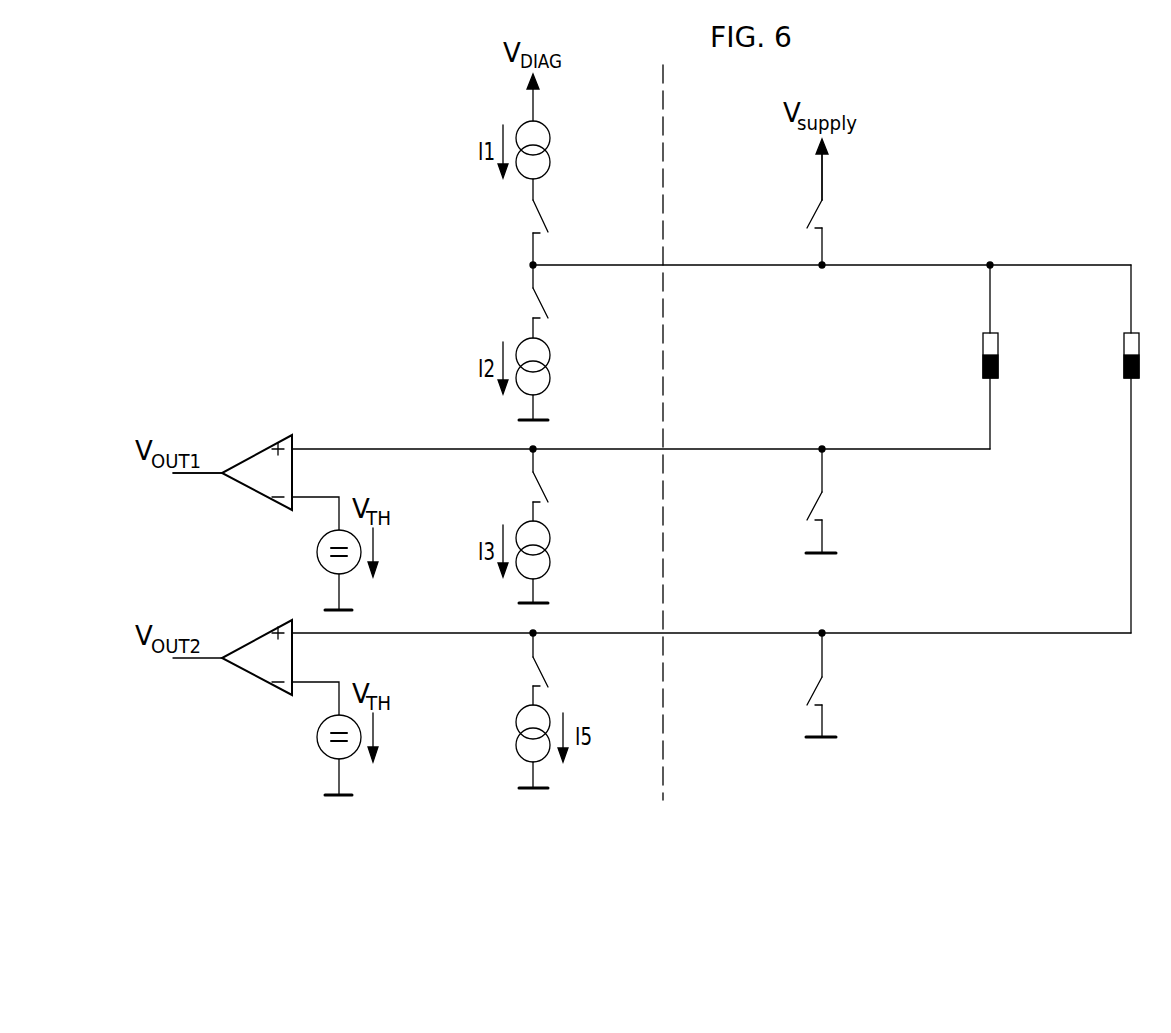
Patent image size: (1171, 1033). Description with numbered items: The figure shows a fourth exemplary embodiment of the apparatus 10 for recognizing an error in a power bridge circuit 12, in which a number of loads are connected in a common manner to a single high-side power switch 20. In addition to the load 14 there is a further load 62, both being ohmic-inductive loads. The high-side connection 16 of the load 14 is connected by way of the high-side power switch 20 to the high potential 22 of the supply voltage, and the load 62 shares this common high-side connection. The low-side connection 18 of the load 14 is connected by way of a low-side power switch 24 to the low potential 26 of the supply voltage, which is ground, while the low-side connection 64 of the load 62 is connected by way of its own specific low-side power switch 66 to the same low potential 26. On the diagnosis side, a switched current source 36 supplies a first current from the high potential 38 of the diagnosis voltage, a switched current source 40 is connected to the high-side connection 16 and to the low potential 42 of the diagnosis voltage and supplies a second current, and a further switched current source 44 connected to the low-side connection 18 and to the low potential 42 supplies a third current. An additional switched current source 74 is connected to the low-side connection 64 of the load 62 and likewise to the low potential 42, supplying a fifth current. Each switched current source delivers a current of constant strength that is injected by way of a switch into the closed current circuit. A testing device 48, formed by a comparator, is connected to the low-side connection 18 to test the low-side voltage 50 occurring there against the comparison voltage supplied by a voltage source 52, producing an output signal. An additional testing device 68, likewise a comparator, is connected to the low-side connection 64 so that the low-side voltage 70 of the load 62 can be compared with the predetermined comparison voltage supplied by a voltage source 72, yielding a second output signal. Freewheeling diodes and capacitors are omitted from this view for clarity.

The apparatus 10 is at (256, 128).
The power bridge circuit 12 is at (1068, 101).
The load 14 is at (982, 351).
The high-side connection 16 is at (826, 262).
The low-side connection 18 is at (826, 447).
The high-side power switch 20 is at (811, 214).
The high potential of the supply voltage 22 is at (816, 144).
The low-side power switch 24 is at (811, 506).
The low potential of the supply voltage 26 is at (812, 558).
The switched current source 36 is at (496, 187).
The high potential of the diagnosis voltage 38 is at (526, 82).
The switched current source 40 is at (496, 320).
The low potential of the diagnosis voltage 42 is at (541, 422).
The switched current source 44 is at (503, 506).
The testing device 48 is at (250, 492).
The low-side voltage 50 is at (845, 470).
The voltage source 52 is at (317, 553).
The load 62 is at (1122, 351).
The low-side connection 64 is at (826, 631).
The low-side power switch 66 is at (811, 689).
The testing device 68 is at (250, 677).
The low-side voltage 70 is at (845, 655).
The voltage source 72 is at (317, 738).
The switched current source 74 is at (503, 690).